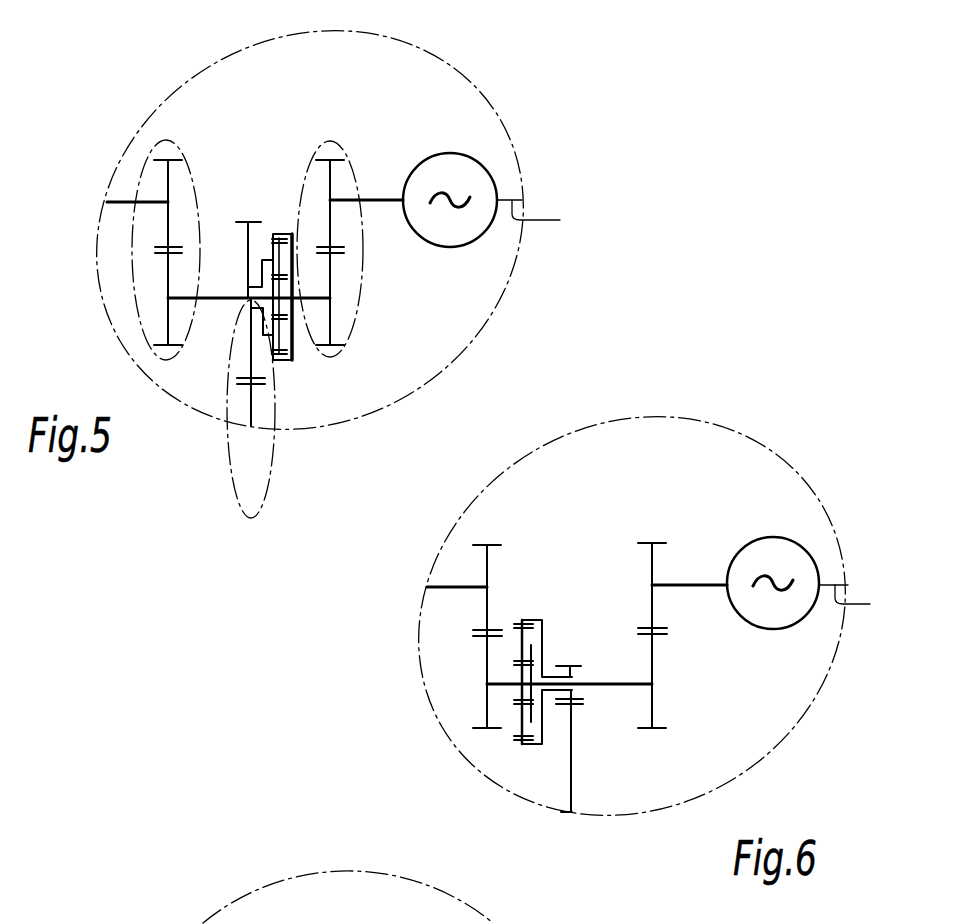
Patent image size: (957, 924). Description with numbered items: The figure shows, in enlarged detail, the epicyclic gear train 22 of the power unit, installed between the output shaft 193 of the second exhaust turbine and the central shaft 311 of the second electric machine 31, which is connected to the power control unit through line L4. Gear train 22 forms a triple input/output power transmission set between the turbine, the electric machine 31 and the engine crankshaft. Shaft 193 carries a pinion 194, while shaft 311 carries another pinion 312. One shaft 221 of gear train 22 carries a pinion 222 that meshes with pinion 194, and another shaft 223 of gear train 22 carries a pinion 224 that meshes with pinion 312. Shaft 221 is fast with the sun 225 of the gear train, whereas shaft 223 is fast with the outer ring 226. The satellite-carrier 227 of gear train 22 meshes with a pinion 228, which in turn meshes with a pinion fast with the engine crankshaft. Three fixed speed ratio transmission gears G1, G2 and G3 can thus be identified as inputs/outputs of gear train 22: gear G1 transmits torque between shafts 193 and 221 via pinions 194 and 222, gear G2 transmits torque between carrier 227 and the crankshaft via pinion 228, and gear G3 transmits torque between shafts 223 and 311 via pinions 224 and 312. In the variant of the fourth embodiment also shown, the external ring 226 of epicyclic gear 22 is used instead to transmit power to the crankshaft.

In FIG. 5, the epicyclic gear train 22 is at (248, 184).
In FIG. 6, the epicyclic gear train 22 is at (560, 587).
In FIG. 5, the output shaft 193 is at (107, 203).
In FIG. 6, the output shaft 193 is at (427, 588).
In FIG. 5, the pinion 194 is at (167, 188).
In FIG. 6, the pinion 194 is at (487, 572).
In FIG. 5, the shaft 221 is at (213, 283).
In FIG. 6, the shaft 221 is at (507, 682).
In FIG. 5, the pinion 222 is at (160, 314).
In FIG. 6, the pinion 222 is at (487, 700).
In FIG. 5, the shaft 223 is at (303, 345).
In FIG. 6, the shaft 223 is at (609, 688).
In FIG. 5, the pinion 224 is at (333, 318).
In FIG. 6, the pinion 224 is at (655, 706).
In FIG. 5, the sun 225 is at (297, 281).
In FIG. 6, the sun 225 is at (514, 700).
In FIG. 5, the outer ring 226 is at (292, 236).
In FIG. 6, the outer ring 226 is at (530, 620).
In FIG. 5, the satellite-carrier 227 is at (265, 326).
In FIG. 6, the satellite-carrier 227 is at (546, 713).
In FIG. 5, the pinion 228 is at (252, 410).
In FIG. 6, the pinion 228 is at (573, 793).
In FIG. 5, the second electric machine 31 is at (441, 233).
In FIG. 6, the second electric machine 31 is at (764, 620).
In FIG. 5, the central shaft 311 is at (383, 197).
In FIG. 6, the central shaft 311 is at (704, 585).
In FIG. 5, the pinion 312 is at (332, 183).
In FIG. 6, the pinion 312 is at (652, 568).
In FIG. 5, the fixed speed ratio transmission gear G1 is at (167, 140).
In FIG. 5, the fixed speed ratio transmission gear G2 is at (238, 491).
In FIG. 5, the fixed speed ratio transmission gear G3 is at (329, 140).
In FIG. 5, the line L4 is at (542, 218).
In FIG. 6, the line L4 is at (859, 602).